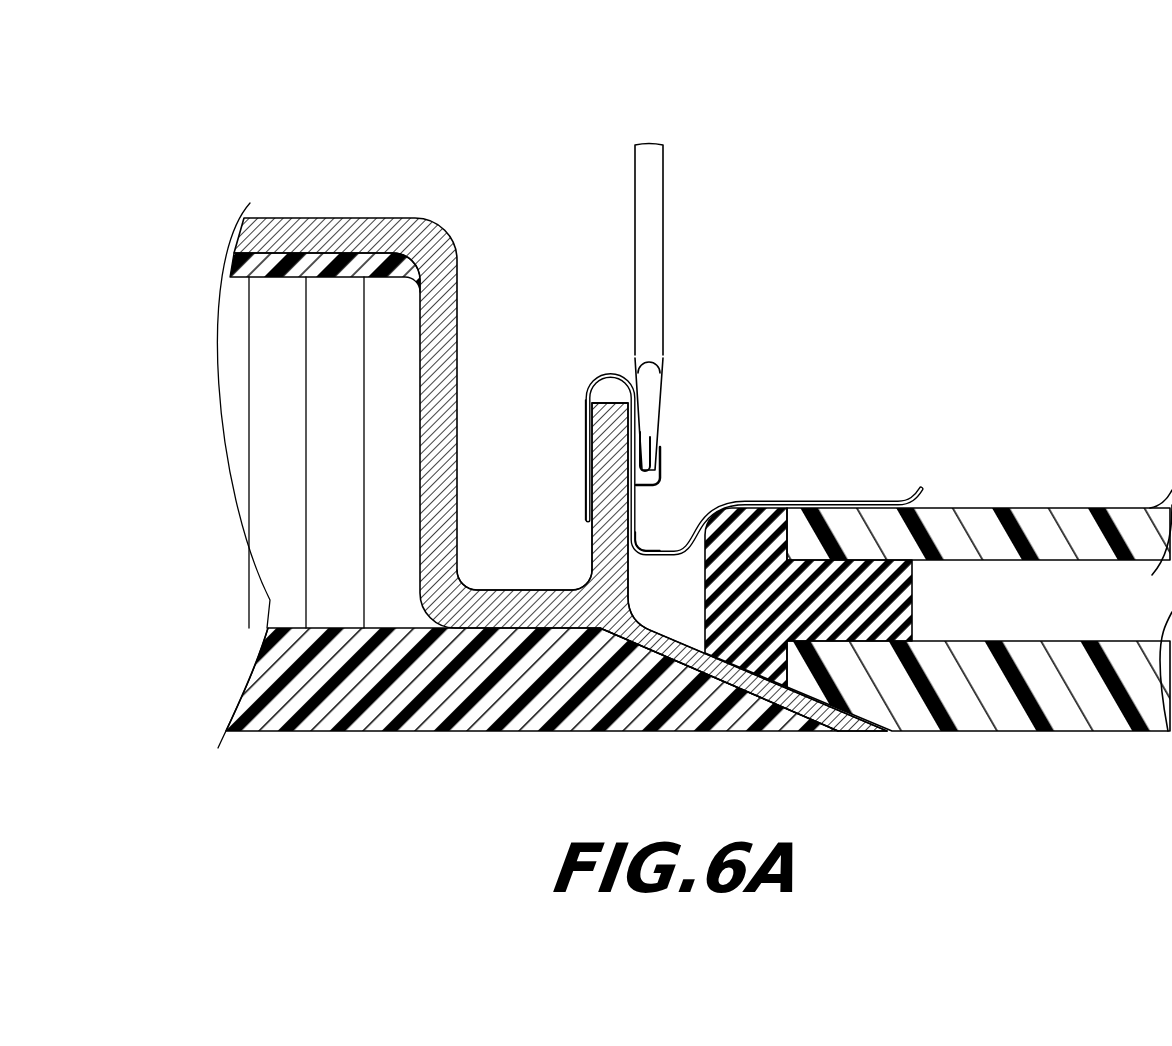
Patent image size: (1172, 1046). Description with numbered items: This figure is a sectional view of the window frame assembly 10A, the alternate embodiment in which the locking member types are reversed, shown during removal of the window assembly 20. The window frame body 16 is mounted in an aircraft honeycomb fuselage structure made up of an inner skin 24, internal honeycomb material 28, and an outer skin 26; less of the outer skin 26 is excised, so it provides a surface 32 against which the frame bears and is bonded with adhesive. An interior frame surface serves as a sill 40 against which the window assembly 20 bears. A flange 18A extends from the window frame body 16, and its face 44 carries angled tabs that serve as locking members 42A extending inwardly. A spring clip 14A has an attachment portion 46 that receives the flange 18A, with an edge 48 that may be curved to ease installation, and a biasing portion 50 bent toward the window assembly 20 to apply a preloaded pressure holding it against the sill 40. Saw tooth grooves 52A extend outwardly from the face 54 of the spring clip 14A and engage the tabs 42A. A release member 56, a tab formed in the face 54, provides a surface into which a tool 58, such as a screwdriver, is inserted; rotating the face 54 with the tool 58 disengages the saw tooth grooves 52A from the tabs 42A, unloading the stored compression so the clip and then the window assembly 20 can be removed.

The window frame assembly 10A is at (418, 108).
The window frame body 16 is at (316, 217).
The inner skin 24 is at (238, 263).
The honeycomb material 28 is at (265, 394).
The outer skin 26 is at (284, 668).
The surface 32 is at (732, 667).
The sill 40 is at (682, 632).
The flange 18A is at (575, 563).
The spring clip 14A is at (560, 300).
The biasing portion 50 is at (773, 484).
The window assembly 20 is at (998, 488).
The face 54 is at (650, 531).
The edge 48 is at (577, 519).
The attachment portion 46 is at (610, 392).
The face 44 is at (648, 558).
The release member 56 is at (667, 463).
The locking members 42A is at (736, 420).
The saw tooth grooves 52A is at (655, 433).
The tool 58 is at (664, 350).